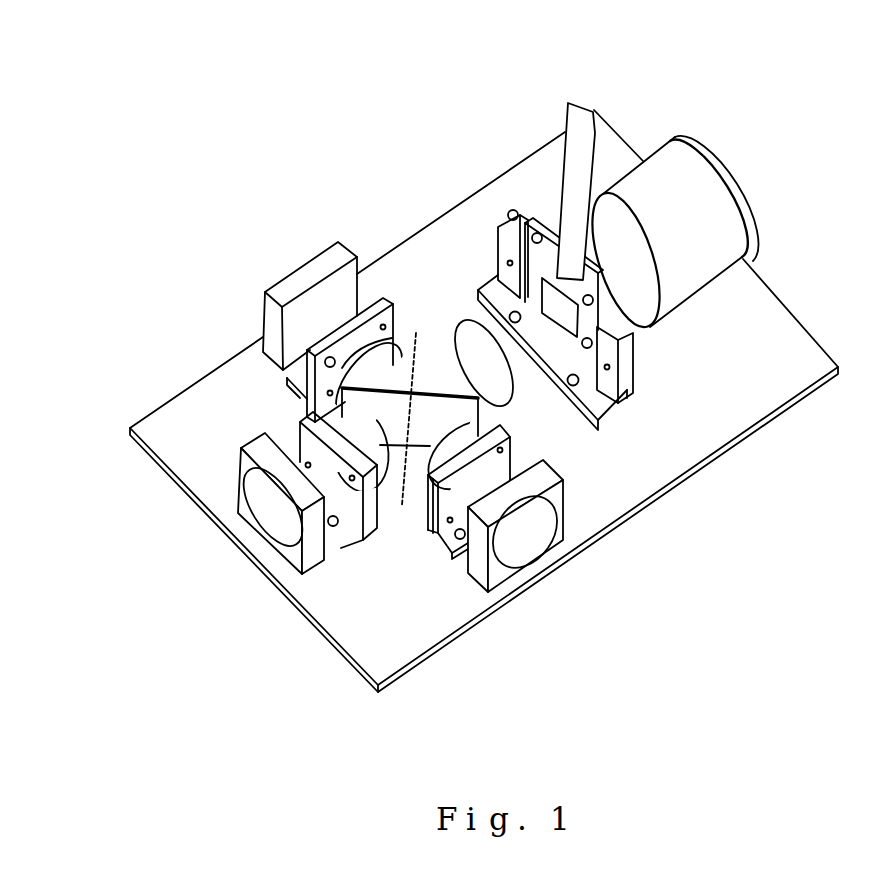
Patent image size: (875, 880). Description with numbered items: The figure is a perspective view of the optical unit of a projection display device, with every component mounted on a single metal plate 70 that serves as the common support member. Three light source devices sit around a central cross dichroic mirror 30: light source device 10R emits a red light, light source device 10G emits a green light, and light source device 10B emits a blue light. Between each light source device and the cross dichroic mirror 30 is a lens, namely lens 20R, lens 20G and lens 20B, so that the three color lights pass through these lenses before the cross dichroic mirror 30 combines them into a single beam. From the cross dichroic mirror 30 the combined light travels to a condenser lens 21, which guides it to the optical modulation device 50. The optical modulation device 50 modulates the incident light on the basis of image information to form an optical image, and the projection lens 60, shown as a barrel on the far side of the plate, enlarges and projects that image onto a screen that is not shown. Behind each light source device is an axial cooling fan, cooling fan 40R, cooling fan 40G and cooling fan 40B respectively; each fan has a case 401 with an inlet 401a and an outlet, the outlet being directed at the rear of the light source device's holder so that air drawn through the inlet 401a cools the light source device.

The light source device 10R is at (254, 297).
The light source device 10G is at (243, 505).
The light source device 10B is at (575, 566).
The lens 20R is at (350, 302).
The lens 20G is at (301, 538).
The lens 20B is at (449, 566).
The condenser lens 21 is at (484, 246).
The cross dichroic mirror 30 is at (410, 302).
The cooling fan 40R is at (302, 267).
The cooling fan 40G is at (204, 503).
The cooling fan 40B is at (590, 573).
The case 401 is at (550, 585).
The inlet 401a is at (550, 563).
The optical modulation device 50 is at (555, 247).
The projection lens 60 is at (669, 184).
The metal plate 70 is at (494, 401).